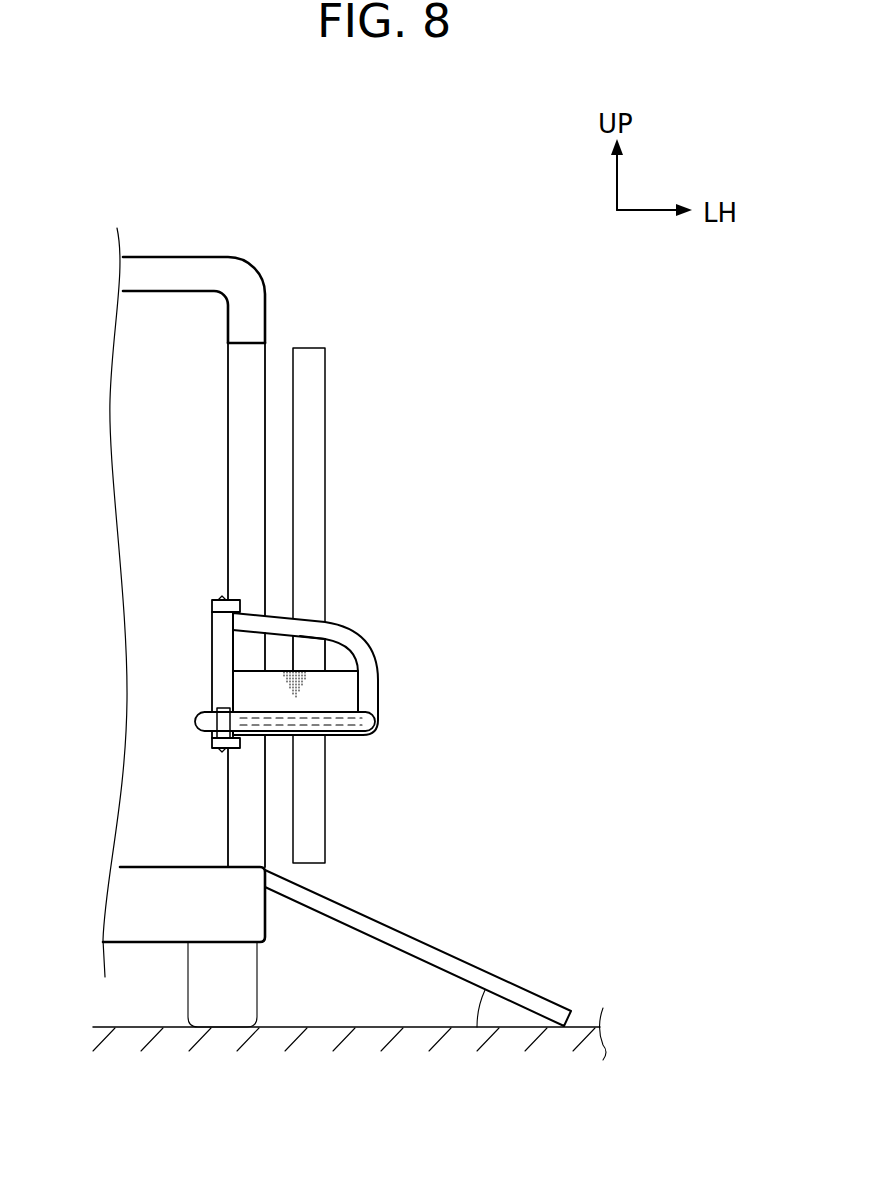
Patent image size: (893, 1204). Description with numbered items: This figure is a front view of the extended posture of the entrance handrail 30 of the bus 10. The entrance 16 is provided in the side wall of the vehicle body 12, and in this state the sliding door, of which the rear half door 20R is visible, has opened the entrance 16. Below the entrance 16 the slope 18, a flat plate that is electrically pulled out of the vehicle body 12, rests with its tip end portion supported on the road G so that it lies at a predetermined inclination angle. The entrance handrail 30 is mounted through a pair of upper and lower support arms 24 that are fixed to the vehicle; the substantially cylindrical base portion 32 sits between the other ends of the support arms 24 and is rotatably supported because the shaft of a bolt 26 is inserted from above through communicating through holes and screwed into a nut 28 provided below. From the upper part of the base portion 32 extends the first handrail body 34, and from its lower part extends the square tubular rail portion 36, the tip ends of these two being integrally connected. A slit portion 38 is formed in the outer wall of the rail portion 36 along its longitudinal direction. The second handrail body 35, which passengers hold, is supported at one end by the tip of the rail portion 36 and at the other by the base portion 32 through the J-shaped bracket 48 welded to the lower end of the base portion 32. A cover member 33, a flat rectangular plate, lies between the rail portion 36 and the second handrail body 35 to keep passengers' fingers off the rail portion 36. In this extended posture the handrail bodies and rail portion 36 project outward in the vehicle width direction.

The bus 10 is at (326, 249).
The vehicle body 12 is at (218, 258).
The entrance 16 is at (256, 348).
The slope 18 is at (447, 948).
The rear half door 20R is at (325, 425).
The support arms 24 is at (212, 608).
The bolt 26 is at (221, 600).
The nut 28 is at (222, 750).
The entrance handrail 30 is at (379, 697).
The base portion 32 is at (212, 670).
The cover member 33 is at (325, 684).
The first handrail body 34 is at (278, 670).
The second handrail body 35 is at (340, 735).
The rail portion 36 is at (276, 736).
The slit portion 38 is at (318, 708).
The bracket 48 is at (195, 721).
The road G is at (583, 1026).